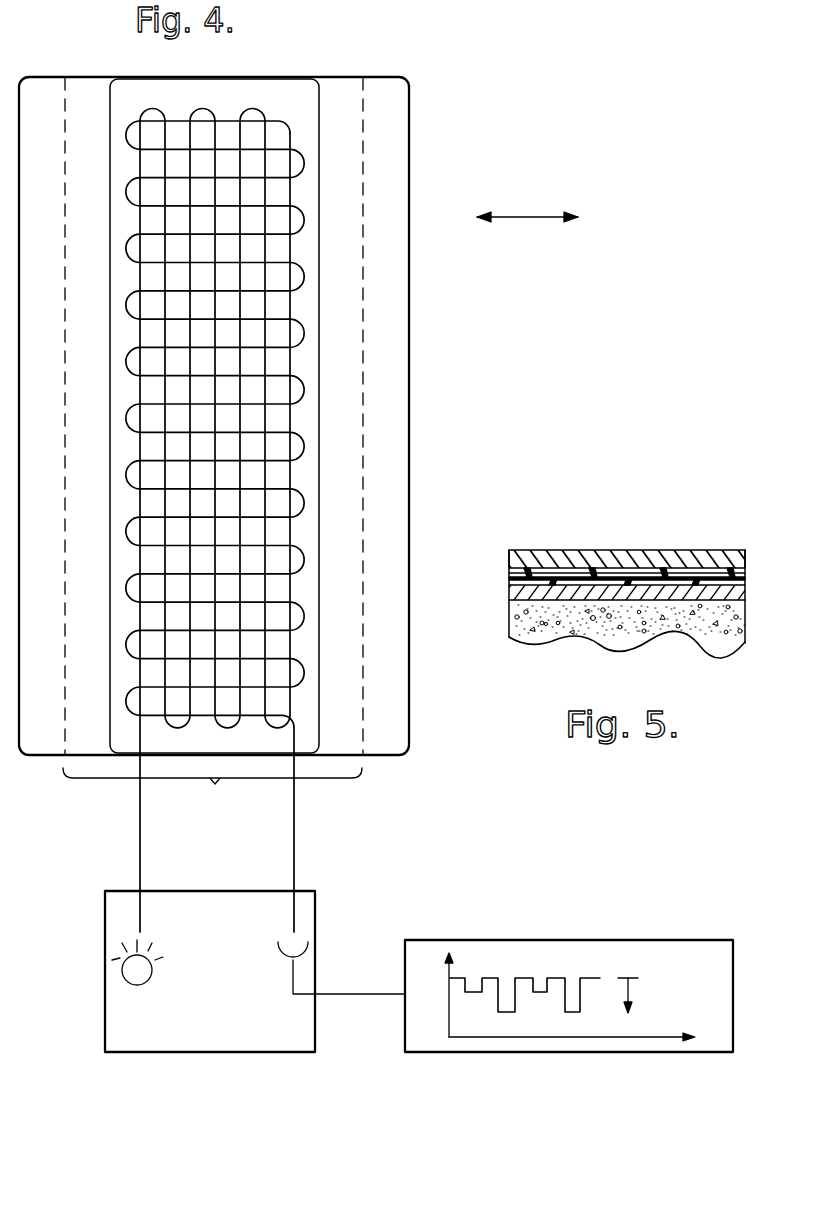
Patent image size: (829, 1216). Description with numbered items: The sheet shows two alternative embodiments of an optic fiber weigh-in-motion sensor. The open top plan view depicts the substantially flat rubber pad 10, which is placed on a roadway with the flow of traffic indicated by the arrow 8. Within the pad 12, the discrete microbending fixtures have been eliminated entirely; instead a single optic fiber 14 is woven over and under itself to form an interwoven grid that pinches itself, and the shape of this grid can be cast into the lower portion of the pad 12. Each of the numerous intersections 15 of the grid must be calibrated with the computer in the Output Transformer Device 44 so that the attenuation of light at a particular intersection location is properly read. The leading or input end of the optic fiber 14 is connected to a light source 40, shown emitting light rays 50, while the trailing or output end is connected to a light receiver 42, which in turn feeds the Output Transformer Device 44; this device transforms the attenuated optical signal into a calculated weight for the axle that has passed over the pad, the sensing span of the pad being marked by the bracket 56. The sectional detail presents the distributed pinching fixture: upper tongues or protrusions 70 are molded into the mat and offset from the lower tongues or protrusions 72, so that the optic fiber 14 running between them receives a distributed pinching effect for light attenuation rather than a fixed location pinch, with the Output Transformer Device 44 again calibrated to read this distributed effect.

In FIG. 4, the arrow 8 is at (540, 219).
In FIG. 4, the rubber pad 10 is at (423, 162).
In FIG. 4, the pad 12 is at (298, 90).
In FIG. 4, the optic fiber 14 is at (296, 526).
In FIG. 5, the optic fiber 14 is at (540, 576).
In FIG. 4, the intersections 15 is at (298, 520).
In FIG. 4, the light source 40 is at (142, 978).
In FIG. 4, the light receiver 42 is at (282, 959).
In FIG. 4, the Output Transformer Device 44 is at (706, 992).
In FIG. 4, the light rays 50 is at (150, 950).
In FIG. 4, the sensing width 56 is at (212, 794).
In FIG. 5, the upper tongues or protrusions 70 is at (663, 566).
In FIG. 5, the lower tongues or protrusions 72 is at (690, 585).